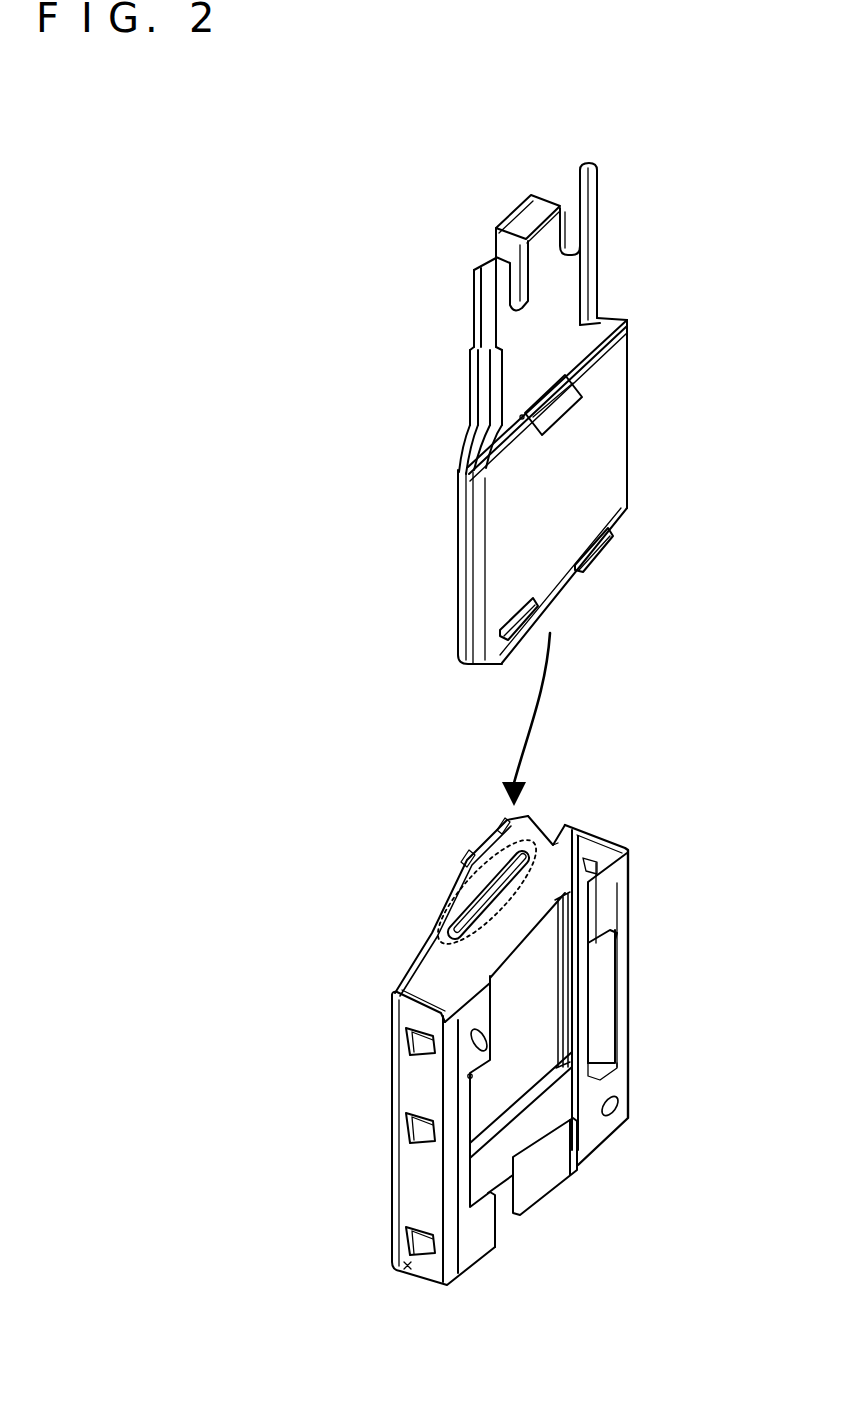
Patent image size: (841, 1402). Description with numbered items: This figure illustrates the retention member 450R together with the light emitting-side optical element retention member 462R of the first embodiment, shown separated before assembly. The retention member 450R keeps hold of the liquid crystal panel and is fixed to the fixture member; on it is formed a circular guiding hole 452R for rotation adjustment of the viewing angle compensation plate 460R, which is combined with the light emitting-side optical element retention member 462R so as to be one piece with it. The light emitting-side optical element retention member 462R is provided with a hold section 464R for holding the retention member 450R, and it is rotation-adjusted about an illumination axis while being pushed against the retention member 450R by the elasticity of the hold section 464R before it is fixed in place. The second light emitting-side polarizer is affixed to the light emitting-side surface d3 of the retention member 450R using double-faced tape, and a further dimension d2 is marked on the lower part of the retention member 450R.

The retention member 450R is at (643, 871).
The guiding hole 452R is at (440, 962).
The viewing angle compensation plate 460R is at (617, 441).
The light emitting-side optical element retention member 462R is at (651, 260).
The hold section 464R is at (524, 214).
The distance d2 is at (407, 1268).
The light emitting-side surface d3 is at (560, 843).